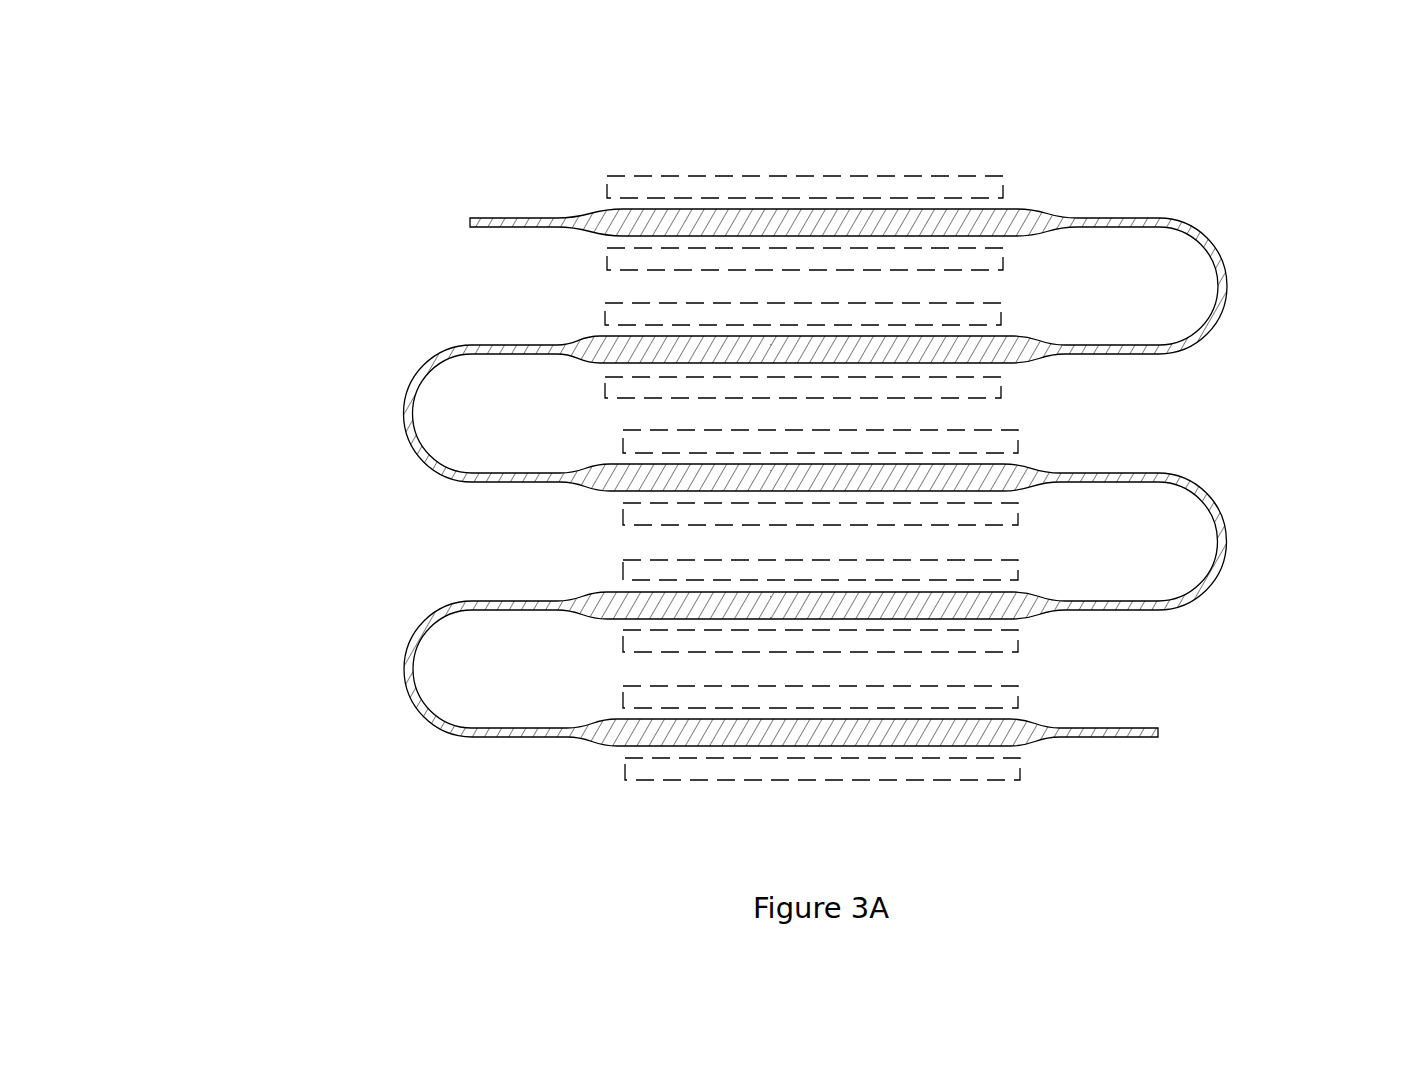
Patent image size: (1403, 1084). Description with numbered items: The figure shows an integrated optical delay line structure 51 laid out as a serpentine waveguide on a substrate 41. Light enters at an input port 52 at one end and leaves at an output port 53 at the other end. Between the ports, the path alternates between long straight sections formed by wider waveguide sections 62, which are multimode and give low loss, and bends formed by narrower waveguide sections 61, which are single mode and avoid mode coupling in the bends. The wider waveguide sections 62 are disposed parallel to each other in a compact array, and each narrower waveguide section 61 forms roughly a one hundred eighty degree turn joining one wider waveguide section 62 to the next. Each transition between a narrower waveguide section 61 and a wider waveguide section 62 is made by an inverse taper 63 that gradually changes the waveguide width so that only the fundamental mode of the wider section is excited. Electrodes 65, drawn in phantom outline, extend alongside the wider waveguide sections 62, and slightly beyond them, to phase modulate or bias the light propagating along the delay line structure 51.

The sensor assembly 41 is at (1345, 710).
The integrated optical delay line structure 51 is at (296, 309).
The input port 52 is at (471, 217).
The output port 53 is at (1143, 739).
The narrower waveguide sections 61 is at (1224, 266).
The wider waveguide sections 62 is at (735, 337).
The inverse tapers 63 is at (599, 210).
The electrodes 65 is at (1019, 705).